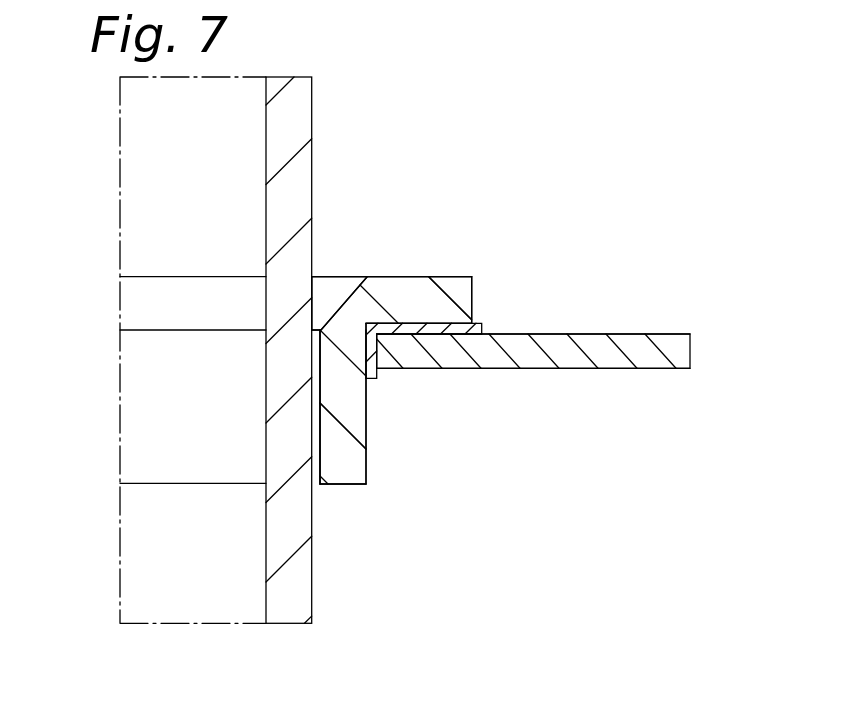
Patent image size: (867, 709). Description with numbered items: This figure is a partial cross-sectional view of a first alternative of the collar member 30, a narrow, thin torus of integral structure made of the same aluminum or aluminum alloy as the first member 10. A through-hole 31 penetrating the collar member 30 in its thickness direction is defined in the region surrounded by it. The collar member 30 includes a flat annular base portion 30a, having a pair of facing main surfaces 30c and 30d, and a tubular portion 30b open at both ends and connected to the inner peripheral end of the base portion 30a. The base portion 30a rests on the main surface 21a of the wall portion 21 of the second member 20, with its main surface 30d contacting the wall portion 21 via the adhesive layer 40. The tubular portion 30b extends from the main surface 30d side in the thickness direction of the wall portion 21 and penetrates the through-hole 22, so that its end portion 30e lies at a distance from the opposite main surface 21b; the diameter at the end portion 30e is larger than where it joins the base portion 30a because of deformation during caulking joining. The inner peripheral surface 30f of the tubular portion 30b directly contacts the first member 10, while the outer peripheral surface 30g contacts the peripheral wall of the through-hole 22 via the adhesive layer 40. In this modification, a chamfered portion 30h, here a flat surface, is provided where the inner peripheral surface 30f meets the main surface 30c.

The first member 10 is at (314, 109).
The through-hole 31 is at (148, 293).
The collar member 30 is at (372, 359).
The base portion 30a is at (415, 287).
The tubular portion 30b is at (330, 390).
The main surface 30c is at (392, 277).
The main surface 30d is at (447, 335).
The end portion 30e is at (342, 453).
The inner peripheral surface 30f is at (323, 430).
The outer peripheral surface 30g is at (368, 437).
The chamfered portion 30h is at (342, 311).
The adhesive layer 40 is at (480, 323).
The second member 20 is at (559, 349).
The wall portion 21 is at (533, 349).
The main surface 21a is at (567, 334).
The main surface 21b is at (637, 368).
The through-hole 22 is at (445, 416).